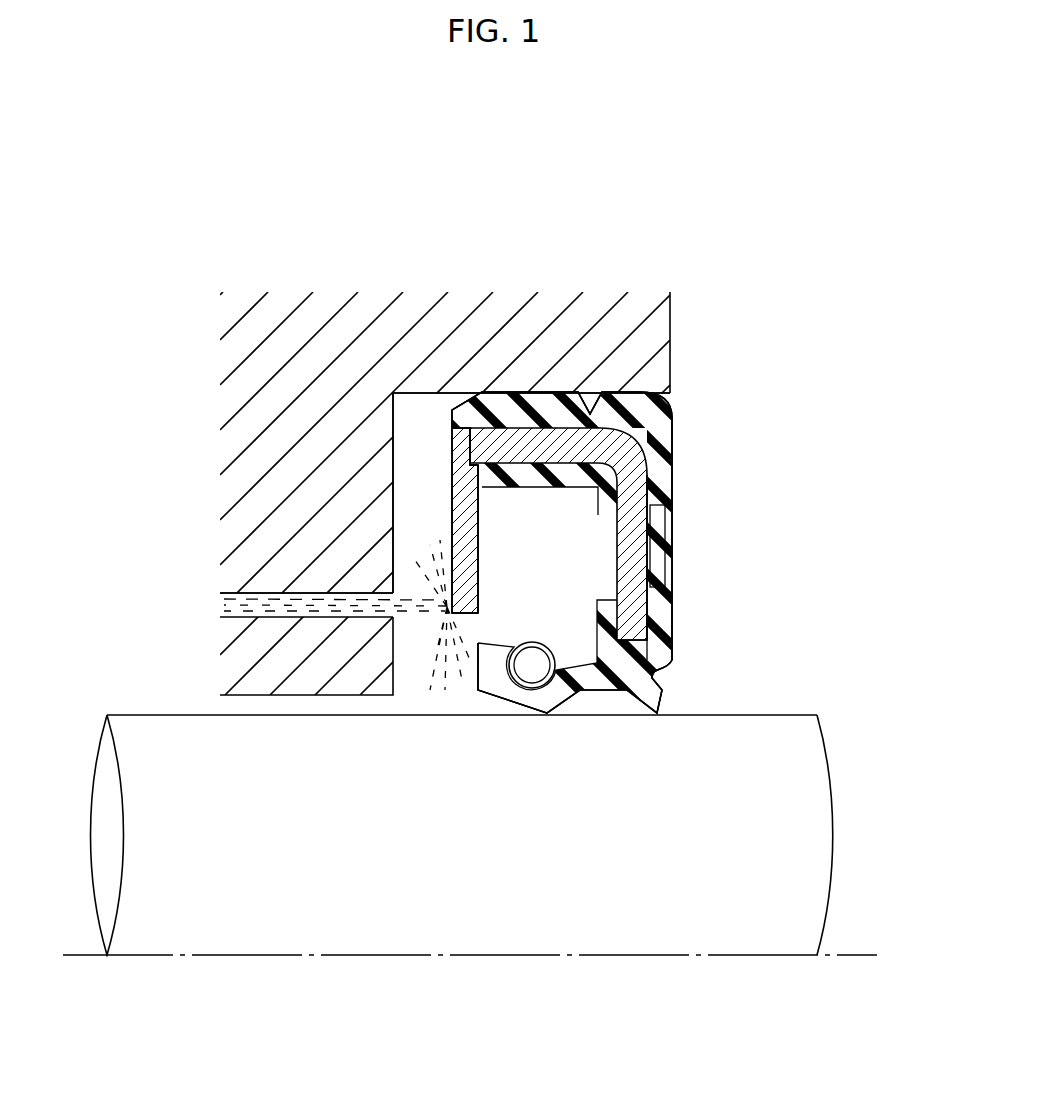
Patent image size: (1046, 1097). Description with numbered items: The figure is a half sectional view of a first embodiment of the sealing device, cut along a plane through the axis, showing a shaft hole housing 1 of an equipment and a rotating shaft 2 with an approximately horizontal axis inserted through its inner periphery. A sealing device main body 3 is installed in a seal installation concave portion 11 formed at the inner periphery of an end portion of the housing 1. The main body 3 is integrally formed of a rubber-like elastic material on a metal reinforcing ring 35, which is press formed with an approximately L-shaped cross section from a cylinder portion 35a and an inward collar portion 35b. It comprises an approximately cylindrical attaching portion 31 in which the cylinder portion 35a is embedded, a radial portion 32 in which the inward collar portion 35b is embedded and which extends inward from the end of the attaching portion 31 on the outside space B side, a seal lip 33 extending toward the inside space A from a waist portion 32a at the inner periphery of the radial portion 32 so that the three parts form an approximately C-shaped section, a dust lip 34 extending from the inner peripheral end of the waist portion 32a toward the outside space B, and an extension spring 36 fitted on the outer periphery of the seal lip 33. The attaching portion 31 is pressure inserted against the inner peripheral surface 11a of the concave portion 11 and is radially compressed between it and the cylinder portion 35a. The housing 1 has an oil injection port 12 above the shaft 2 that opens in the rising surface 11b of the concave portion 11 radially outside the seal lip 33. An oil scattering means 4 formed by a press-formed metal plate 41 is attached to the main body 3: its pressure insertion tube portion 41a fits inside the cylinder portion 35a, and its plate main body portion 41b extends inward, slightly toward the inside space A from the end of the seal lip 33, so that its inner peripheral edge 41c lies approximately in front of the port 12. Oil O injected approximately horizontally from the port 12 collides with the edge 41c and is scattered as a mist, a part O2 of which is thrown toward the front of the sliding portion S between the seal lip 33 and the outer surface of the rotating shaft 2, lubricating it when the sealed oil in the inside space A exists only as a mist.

The shaft hole housing 1 is at (295, 285).
The seal installation concave portion 11 is at (433, 430).
The inner peripheral surface 11a is at (655, 392).
The rising surface 11b is at (392, 480).
The oil injection port 12 is at (393, 600).
The rotating shaft 2 is at (255, 908).
The sealing device main body 3 is at (678, 452).
The attaching portion 31 is at (525, 415).
The radial portion 32 is at (667, 483).
The waist portion 32a is at (652, 676).
The seal lip 33 is at (495, 712).
The dust lip 34 is at (657, 715).
The reinforcing ring 35 is at (637, 547).
The cylinder portion 35a is at (540, 412).
The inward collar portion 35b is at (637, 567).
The extension spring 36 is at (532, 642).
The oil scattering means 4 is at (450, 518).
The plate 41 is at (391, 491).
The pressure insertion tube portion 41a is at (485, 445).
The plate main body portion 41b is at (452, 540).
The inner peripheral edge 41c is at (417, 615).
The sliding portion S is at (527, 731).
The oil O is at (403, 607).
The scattered oil part O2 is at (447, 628).
The inside space A is at (100, 697).
The outside space B is at (943, 593).